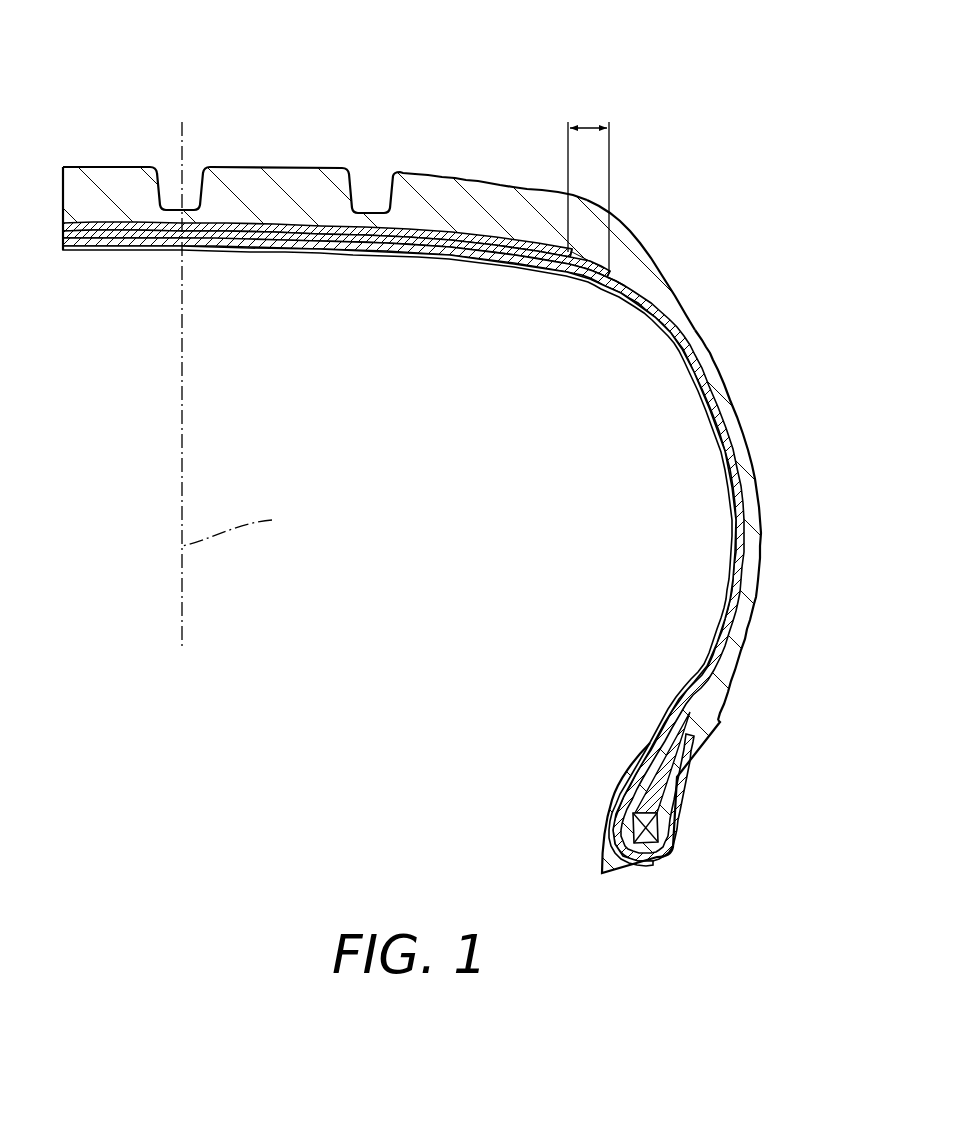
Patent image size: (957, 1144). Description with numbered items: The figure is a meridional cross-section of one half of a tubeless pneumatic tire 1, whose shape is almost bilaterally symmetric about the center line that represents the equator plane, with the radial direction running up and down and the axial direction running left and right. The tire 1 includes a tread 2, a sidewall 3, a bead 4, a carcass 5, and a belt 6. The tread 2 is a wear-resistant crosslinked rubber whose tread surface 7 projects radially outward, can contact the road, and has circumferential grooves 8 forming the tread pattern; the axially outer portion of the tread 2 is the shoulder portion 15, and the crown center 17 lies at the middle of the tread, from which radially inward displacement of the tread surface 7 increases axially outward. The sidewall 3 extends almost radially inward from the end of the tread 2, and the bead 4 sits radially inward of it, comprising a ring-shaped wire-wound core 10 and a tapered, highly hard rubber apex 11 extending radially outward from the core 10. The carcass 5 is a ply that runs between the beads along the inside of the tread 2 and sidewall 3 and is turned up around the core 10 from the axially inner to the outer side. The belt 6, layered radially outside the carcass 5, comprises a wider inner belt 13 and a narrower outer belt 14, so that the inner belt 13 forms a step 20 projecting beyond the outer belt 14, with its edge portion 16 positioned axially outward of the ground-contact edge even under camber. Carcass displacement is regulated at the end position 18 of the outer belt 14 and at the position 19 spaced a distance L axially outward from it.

The pneumatic tire 1 is at (478, 456).
The tread 2 is at (379, 189).
The sidewall 3 is at (745, 438).
The bead 4 is at (642, 728).
The carcass 5 is at (703, 370).
The belt 6 is at (336, 158).
The tread surface 7 is at (102, 165).
The groove 8 is at (192, 182).
The core 10 is at (650, 828).
The apex 11 is at (657, 783).
The inner belt 13 is at (333, 233).
The outer belt 14 is at (277, 222).
The shoulder portion 15 is at (630, 207).
The edge portion 16 is at (607, 275).
The crown center 17 is at (182, 165).
The end position 18 is at (567, 250).
The position 19 is at (612, 285).
The step 20 is at (590, 260).